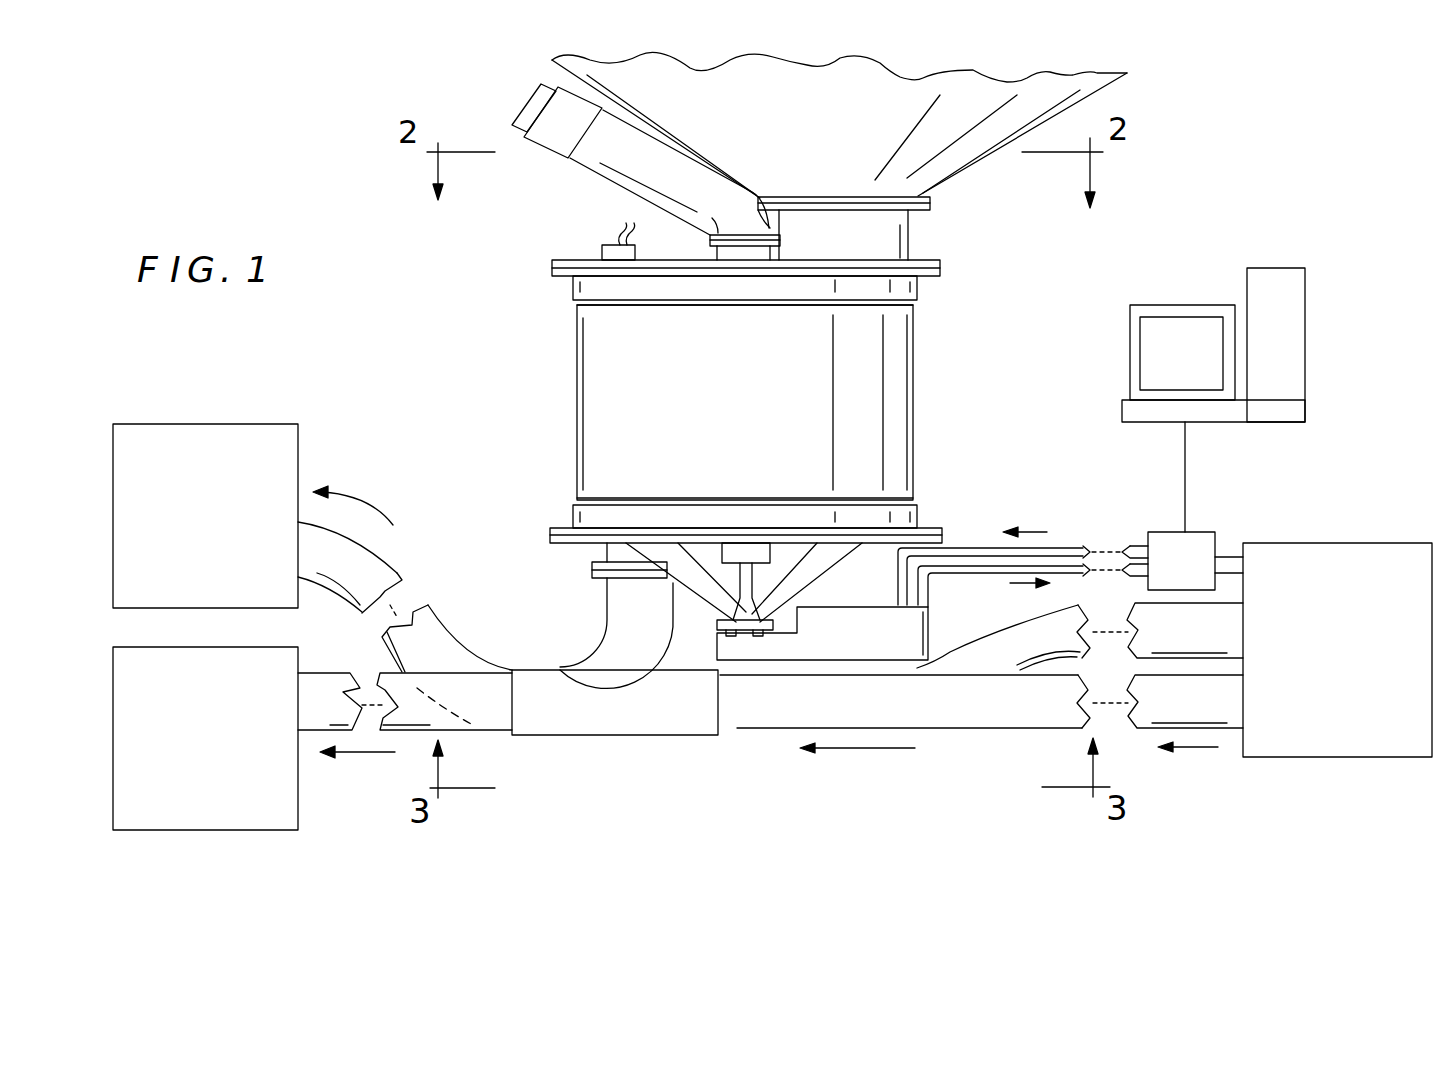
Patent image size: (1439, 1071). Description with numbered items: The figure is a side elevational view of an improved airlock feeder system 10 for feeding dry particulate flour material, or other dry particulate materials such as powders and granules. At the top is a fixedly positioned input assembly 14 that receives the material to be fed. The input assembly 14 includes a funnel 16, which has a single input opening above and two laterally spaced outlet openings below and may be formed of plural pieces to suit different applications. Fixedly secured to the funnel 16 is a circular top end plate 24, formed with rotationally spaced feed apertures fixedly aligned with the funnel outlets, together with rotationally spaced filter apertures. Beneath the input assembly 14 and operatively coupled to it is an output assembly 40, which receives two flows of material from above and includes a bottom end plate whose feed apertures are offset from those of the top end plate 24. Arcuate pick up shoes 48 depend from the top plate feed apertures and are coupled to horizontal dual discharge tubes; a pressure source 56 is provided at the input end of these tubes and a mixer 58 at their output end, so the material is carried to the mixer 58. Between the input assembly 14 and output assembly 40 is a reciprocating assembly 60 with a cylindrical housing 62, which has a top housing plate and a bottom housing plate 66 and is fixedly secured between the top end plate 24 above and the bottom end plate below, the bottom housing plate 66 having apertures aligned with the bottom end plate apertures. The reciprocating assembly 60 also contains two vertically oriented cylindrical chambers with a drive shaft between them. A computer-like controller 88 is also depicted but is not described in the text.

The airlock feeder system 10 is at (1210, 215).
The input assembly 14 is at (953, 205).
The funnel 16 is at (846, 126).
The circular top end plate 24 is at (566, 258).
The output assembly 40 is at (590, 547).
The arcuate pick up shoe 48 is at (648, 653).
The pressure source 56 is at (1357, 733).
The mixer 58 is at (282, 438).
The reciprocating assembly 60 is at (664, 402).
The cylindrical housing 62 is at (765, 408).
The bottom housing plate 66 is at (938, 528).
The controller computer 88 is at (1130, 357).